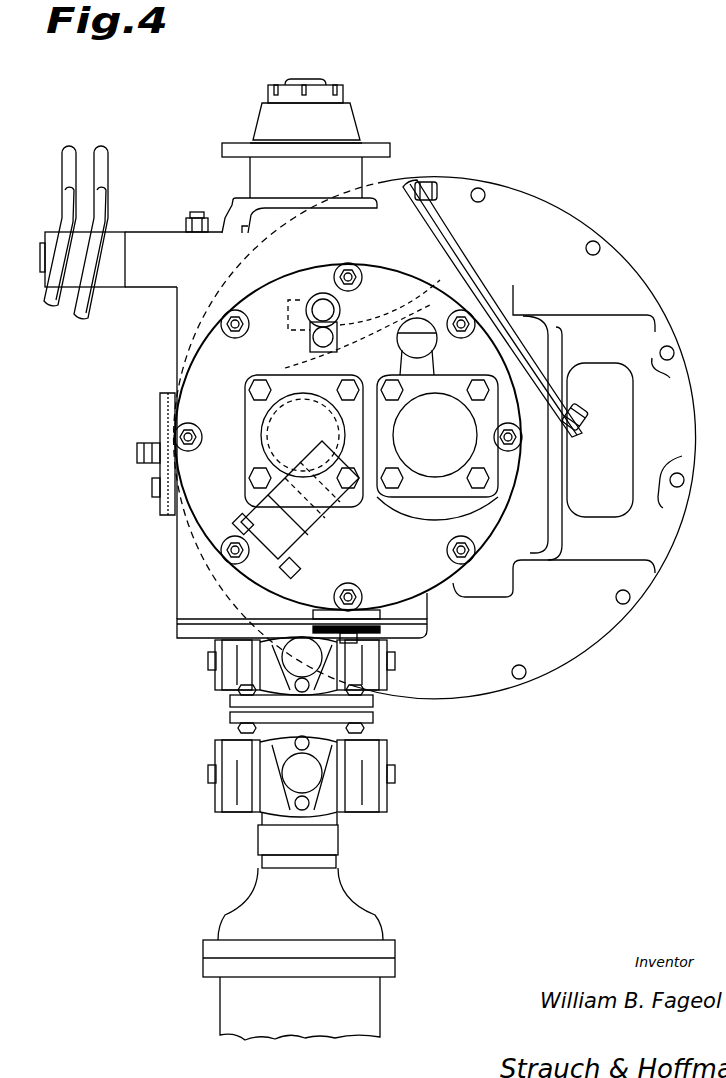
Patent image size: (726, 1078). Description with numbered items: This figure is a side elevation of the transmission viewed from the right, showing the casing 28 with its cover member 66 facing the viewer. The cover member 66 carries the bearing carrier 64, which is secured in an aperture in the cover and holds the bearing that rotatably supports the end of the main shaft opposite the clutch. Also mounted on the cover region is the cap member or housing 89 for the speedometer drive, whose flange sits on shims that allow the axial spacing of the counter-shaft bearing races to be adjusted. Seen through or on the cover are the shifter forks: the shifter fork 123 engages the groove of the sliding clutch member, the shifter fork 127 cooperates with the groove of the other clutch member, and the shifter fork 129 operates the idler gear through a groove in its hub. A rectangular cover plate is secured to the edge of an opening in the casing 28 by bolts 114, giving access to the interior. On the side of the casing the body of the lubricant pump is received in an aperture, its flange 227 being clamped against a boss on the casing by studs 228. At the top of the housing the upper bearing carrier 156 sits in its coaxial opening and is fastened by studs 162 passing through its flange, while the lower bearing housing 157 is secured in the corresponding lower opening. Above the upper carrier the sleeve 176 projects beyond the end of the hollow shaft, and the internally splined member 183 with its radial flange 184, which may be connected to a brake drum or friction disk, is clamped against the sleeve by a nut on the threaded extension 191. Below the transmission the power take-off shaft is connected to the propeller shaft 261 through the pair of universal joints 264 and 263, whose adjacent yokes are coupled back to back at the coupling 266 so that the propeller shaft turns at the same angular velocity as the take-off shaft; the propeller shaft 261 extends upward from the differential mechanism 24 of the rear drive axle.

The casing 28 is at (418, 240).
The bolts 114 is at (430, 188).
The cover member 66 is at (210, 372).
The shifter fork 129 is at (425, 315).
The shifter fork 127 is at (255, 438).
The cap member or housing for the speedometer drive 89 is at (250, 482).
The shifter fork 123 is at (437, 436).
The bearing carrier 64 is at (428, 486).
The flange 227 is at (162, 404).
The studs 228 is at (137, 452).
The upper bearing carrier 156 is at (288, 206).
The sleeve 176 is at (249, 172).
The radial flange 184 is at (385, 149).
The internally splined member 183 is at (340, 122).
The threaded extension 191 is at (322, 82).
The studs 162 is at (192, 214).
The lower bearing housing 157 is at (196, 630).
The universal joint 264 is at (362, 656).
The back-to-back yoke coupling 266 is at (362, 712).
The universal joint 263 is at (362, 780).
The propeller shaft 261 is at (325, 862).
The differential mechanism 24 is at (355, 922).